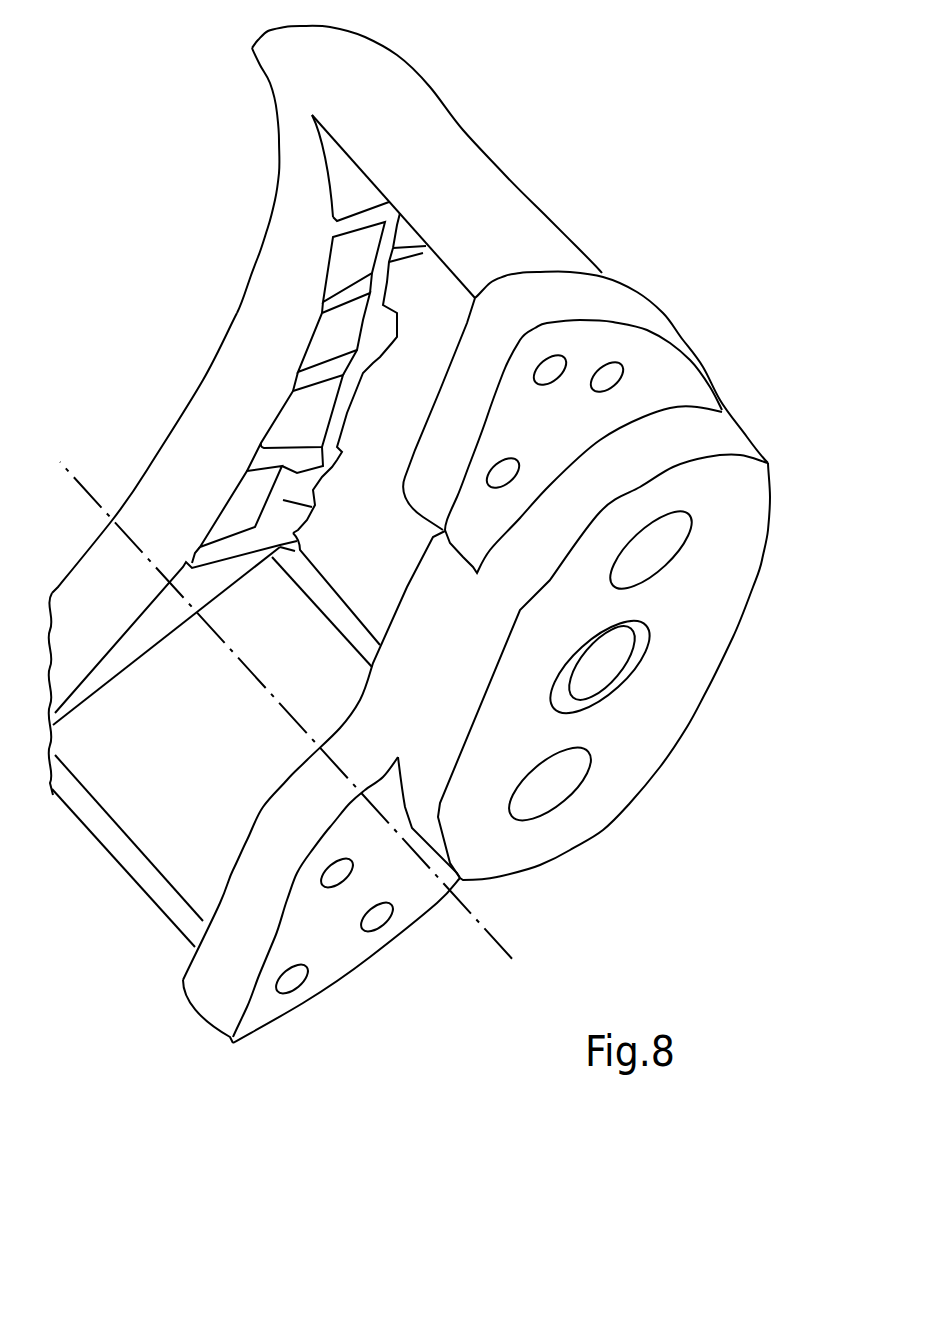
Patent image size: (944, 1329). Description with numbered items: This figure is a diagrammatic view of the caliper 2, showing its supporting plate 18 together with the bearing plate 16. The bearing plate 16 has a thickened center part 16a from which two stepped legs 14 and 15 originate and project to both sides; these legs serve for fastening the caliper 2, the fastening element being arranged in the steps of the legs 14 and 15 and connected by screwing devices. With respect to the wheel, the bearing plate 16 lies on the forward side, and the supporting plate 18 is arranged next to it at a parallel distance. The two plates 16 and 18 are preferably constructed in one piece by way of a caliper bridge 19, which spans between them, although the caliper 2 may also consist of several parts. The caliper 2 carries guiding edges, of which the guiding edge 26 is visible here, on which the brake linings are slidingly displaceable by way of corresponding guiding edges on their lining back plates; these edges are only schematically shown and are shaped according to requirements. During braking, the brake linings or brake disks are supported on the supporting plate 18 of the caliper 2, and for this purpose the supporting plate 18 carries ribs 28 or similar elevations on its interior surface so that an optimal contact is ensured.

The caliper 2 is at (600, 160).
The stepped leg 14 is at (678, 367).
The stepped leg 15 is at (347, 958).
The bearing plate 16 is at (239, 1058).
The thickened center part 16a is at (753, 497).
The supporting plate 18 is at (222, 392).
The caliper bridge 19 is at (455, 143).
The guiding edge 26 is at (343, 620).
The ribs 28 is at (270, 470).